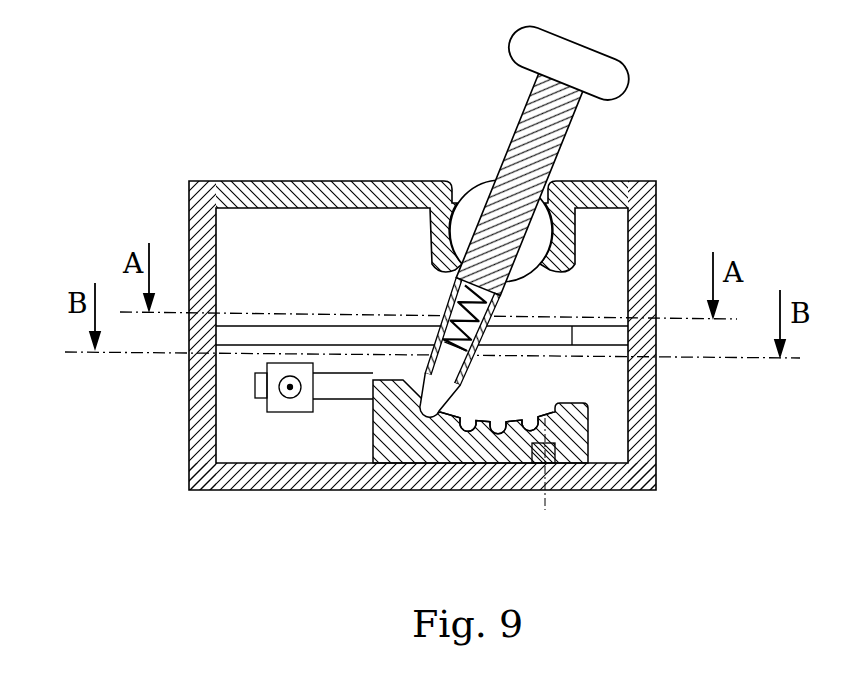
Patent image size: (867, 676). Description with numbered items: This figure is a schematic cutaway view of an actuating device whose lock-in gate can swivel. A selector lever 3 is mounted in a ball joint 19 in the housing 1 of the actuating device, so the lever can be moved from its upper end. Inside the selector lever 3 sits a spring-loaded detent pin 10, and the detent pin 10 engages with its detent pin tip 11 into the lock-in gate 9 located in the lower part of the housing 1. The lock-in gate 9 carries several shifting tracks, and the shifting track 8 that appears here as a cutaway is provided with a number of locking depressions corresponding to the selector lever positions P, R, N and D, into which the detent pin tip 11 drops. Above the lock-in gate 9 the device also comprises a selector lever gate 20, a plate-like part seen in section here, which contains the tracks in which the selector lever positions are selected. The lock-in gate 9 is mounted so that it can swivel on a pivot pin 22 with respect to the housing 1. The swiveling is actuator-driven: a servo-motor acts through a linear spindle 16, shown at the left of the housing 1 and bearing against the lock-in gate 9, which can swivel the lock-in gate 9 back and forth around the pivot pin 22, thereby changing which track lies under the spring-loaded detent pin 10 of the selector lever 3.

The housing 1 is at (243, 142).
The selector lever 3 is at (490, 98).
The shifting track 8 is at (503, 414).
The lock-in gate 9 is at (415, 440).
The detent pin 10 is at (447, 368).
The detent pin tip 11 is at (428, 404).
The linear spindle 16 is at (288, 387).
The ball joint 19 is at (479, 206).
The selector lever gate 20 is at (324, 333).
The pivot pin 22 is at (545, 452).